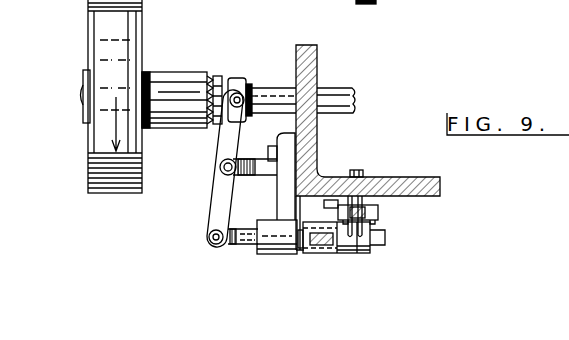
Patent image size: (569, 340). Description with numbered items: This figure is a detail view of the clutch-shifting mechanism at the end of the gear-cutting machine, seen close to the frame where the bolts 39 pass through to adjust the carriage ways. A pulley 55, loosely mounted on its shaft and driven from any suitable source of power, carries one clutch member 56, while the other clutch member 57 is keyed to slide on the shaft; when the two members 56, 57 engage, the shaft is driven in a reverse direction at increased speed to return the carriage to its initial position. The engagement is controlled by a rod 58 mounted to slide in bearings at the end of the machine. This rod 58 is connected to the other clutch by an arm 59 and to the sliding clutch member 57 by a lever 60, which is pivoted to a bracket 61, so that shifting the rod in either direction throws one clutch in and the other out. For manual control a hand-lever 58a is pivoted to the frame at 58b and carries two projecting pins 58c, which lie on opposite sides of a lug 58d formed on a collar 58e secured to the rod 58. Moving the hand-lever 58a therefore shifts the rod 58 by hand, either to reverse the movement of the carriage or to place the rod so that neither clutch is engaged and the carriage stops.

The bolts 39 is at (377, 2).
The pulley 55 is at (134, 40).
The clutch member 56 is at (210, 78).
The clutch member 57 is at (246, 82).
The rod 58 is at (387, 233).
The hand-lever 58a is at (400, 179).
The pivot 58b is at (362, 177).
The projecting pins 58c is at (378, 218).
The lug 58d is at (333, 205).
The collar 58e is at (353, 253).
The arm 59 is at (306, 254).
The lever 60 is at (223, 195).
The bracket 61 is at (267, 172).